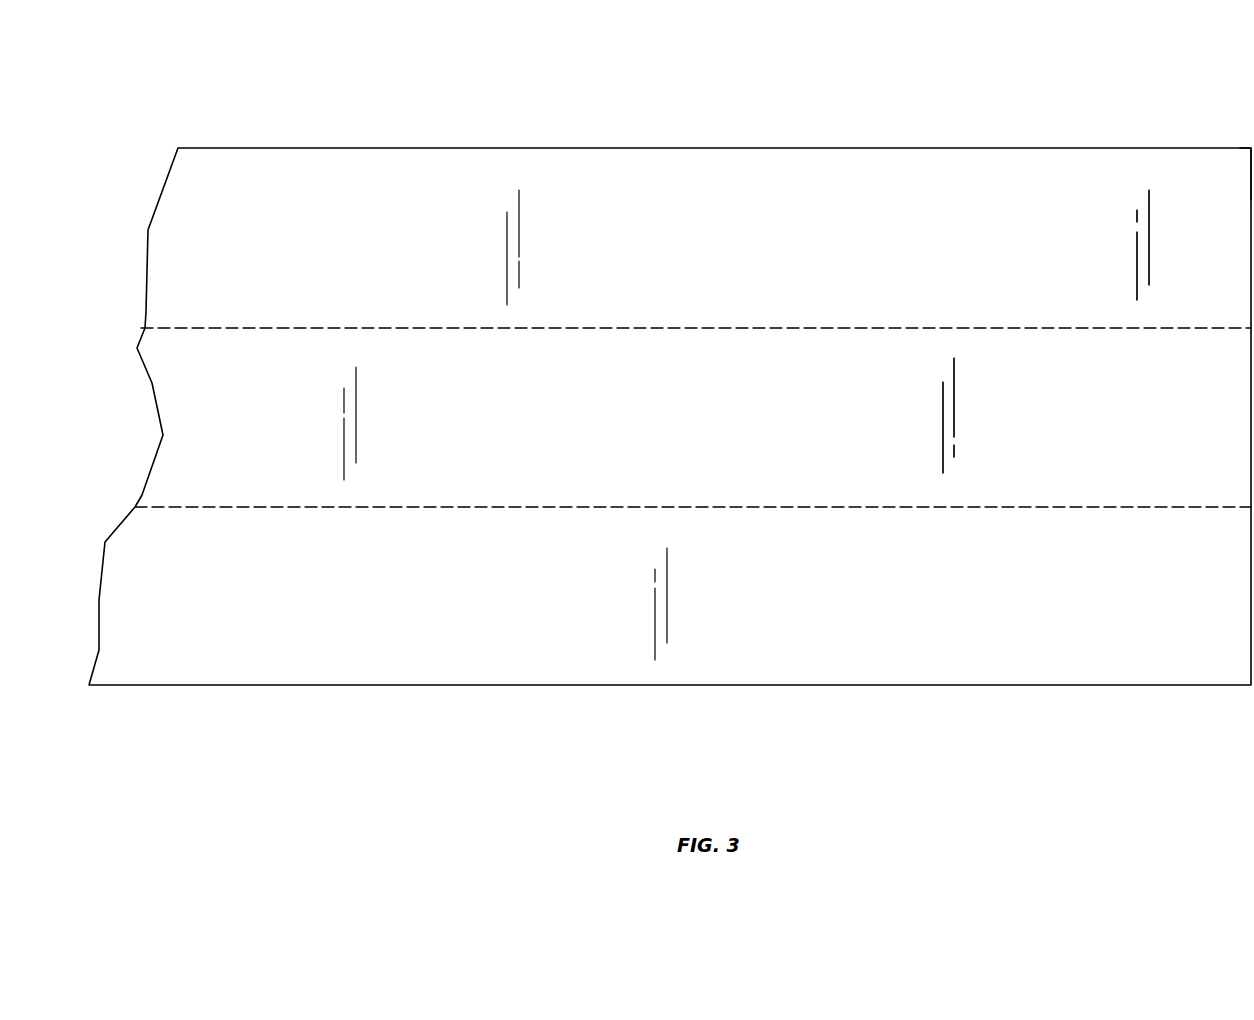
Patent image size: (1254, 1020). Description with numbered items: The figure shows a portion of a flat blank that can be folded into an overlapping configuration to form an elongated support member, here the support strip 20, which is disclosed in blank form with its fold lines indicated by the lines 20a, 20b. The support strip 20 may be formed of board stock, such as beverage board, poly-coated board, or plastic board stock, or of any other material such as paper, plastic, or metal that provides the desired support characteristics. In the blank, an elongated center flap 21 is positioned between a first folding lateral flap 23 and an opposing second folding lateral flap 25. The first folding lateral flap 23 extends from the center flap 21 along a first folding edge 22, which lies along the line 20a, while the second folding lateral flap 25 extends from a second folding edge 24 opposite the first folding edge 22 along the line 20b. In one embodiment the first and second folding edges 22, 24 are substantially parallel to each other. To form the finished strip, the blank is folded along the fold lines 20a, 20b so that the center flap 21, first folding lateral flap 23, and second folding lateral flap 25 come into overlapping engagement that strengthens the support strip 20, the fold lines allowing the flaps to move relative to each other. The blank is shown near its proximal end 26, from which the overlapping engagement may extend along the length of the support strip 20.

The support strip 20 is at (488, 140).
The fold line 20a is at (466, 327).
The fold line 20b is at (482, 507).
The center flap 21 is at (1052, 439).
The first folding edge 22 is at (805, 323).
The first folding lateral flap 23 is at (1017, 279).
The second folding edge 24 is at (783, 500).
The second folding lateral flap 25 is at (1053, 627).
The proximal end 26 is at (1190, 185).